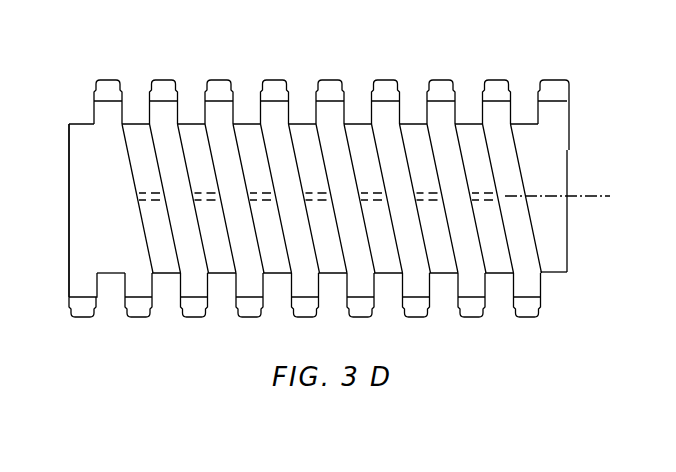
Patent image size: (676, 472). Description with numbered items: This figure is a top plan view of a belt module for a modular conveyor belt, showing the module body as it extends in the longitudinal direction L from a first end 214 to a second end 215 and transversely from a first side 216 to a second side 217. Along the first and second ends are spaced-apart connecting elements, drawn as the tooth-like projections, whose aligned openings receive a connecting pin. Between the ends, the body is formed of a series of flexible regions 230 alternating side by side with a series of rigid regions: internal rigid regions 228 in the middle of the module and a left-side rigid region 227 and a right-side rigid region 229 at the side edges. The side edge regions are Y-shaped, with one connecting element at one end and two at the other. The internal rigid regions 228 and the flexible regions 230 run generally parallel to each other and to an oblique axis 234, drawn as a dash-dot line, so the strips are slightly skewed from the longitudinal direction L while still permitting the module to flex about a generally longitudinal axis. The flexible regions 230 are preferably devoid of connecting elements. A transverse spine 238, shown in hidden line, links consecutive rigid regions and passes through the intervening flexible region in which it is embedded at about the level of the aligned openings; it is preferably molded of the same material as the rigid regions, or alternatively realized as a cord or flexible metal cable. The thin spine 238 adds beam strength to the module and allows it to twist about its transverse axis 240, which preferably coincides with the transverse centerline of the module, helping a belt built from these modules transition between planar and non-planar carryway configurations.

The first end 214 is at (500, 78).
The second end 215 is at (415, 318).
The first side 216 is at (567, 163).
The second side 217 is at (69, 187).
The left-side rigid region 227 is at (110, 264).
The internal rigid regions 228 is at (335, 116).
The right-side rigid region 229 is at (558, 249).
The flexible region 230 is at (133, 128).
The oblique axis 234 is at (458, 70).
The transverse spine 238 is at (263, 203).
The transverse axis 240 is at (585, 197).
The longitudinal direction L is at (623, 120).